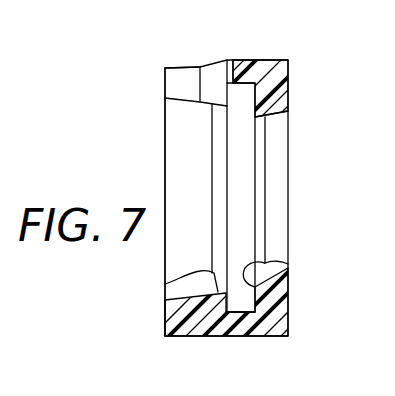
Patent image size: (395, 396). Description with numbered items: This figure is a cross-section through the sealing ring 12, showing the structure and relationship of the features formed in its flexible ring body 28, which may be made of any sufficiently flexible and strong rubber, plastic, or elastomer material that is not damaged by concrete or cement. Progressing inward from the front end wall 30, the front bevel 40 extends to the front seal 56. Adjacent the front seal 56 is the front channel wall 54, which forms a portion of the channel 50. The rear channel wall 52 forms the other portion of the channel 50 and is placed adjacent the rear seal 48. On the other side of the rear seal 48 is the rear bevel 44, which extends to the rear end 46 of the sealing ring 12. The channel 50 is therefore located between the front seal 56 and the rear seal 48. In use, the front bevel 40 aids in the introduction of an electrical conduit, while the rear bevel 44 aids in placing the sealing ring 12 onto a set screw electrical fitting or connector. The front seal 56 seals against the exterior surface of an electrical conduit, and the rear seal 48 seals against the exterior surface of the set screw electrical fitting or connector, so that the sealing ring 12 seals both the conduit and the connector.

The sealing ring 12 is at (214, 13).
The flexible ring body 28 is at (248, 60).
The front end wall 30 is at (288, 310).
The front bevel 40 is at (275, 116).
The rear bevel 44 is at (183, 103).
The rear end 46 is at (164, 84).
The rear seal 48 is at (165, 284).
The channel 50 is at (237, 296).
The rear channel wall 52 is at (227, 95).
The front channel wall 54 is at (288, 264).
The front seal 56 is at (264, 192).